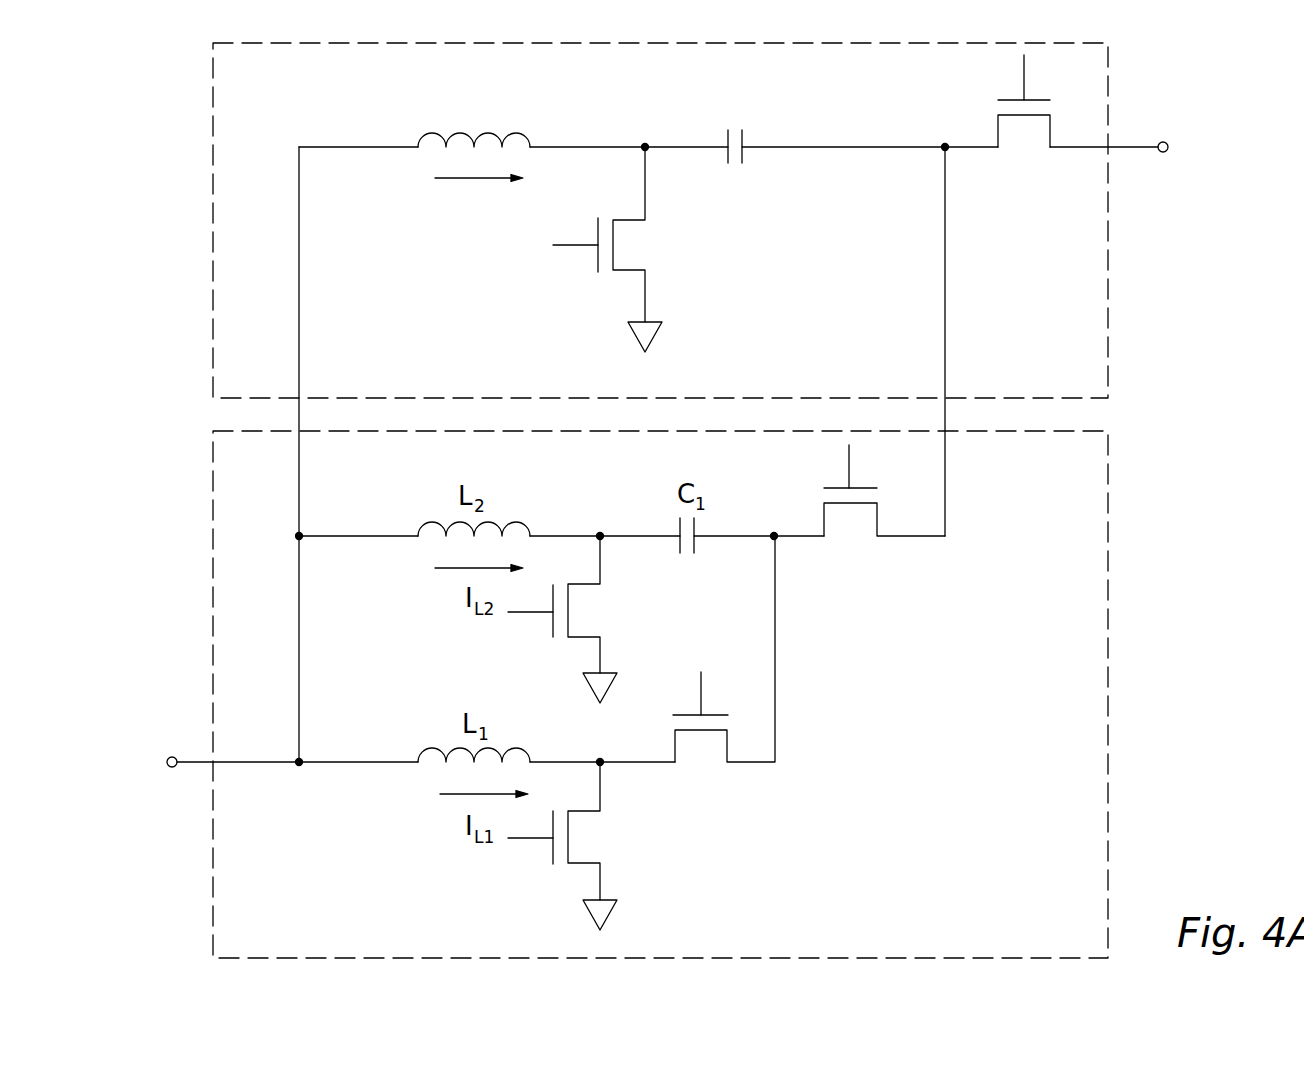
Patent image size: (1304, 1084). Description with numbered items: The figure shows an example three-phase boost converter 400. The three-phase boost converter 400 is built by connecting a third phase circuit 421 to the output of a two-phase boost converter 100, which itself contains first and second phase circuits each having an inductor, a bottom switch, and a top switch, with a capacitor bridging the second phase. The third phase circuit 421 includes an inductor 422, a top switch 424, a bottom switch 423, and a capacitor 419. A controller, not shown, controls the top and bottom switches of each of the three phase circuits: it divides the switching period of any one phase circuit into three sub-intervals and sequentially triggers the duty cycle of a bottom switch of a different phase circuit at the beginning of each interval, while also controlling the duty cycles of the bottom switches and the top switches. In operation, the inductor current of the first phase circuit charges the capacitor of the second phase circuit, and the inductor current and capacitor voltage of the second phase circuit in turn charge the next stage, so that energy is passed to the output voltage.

The three-phase boost converter 400 is at (99, 95).
The third phase circuit 421 is at (1108, 76).
The two-phase boost converter 100 is at (1108, 461).
The inductor 422 is at (430, 133).
The bottom switch 423 is at (617, 245).
The top switch 424 is at (1008, 100).
The capacitor 419 is at (733, 166).